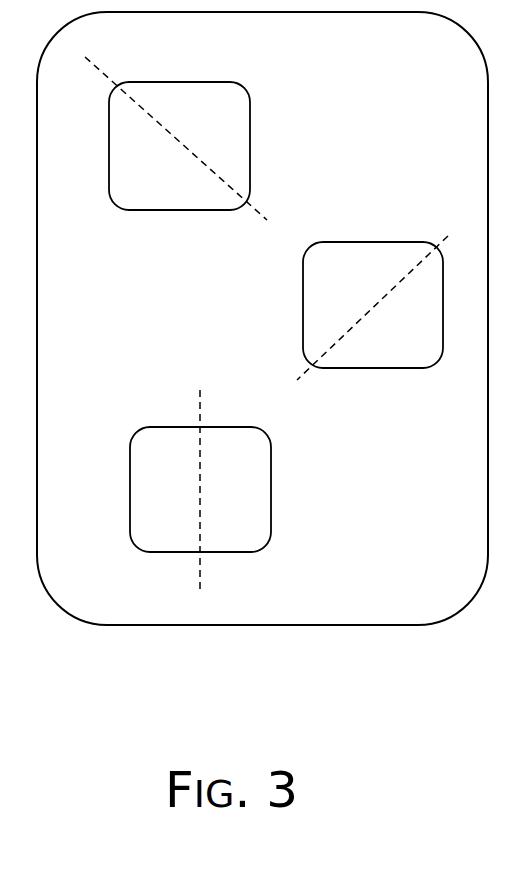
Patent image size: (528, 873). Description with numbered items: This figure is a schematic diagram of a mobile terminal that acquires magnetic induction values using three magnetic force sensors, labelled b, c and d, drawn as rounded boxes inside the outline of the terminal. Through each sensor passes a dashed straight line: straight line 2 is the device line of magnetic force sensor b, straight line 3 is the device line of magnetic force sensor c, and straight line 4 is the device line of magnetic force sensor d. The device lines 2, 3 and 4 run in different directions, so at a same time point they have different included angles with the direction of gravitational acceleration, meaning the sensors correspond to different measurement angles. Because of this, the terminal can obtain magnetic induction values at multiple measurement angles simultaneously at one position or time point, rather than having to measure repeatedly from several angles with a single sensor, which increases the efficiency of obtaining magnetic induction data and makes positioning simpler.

The device line of magnetic force sensor b 2 is at (261, 207).
The device line of magnetic force sensor c 3 is at (440, 235).
The device line of magnetic force sensor d 4 is at (203, 398).